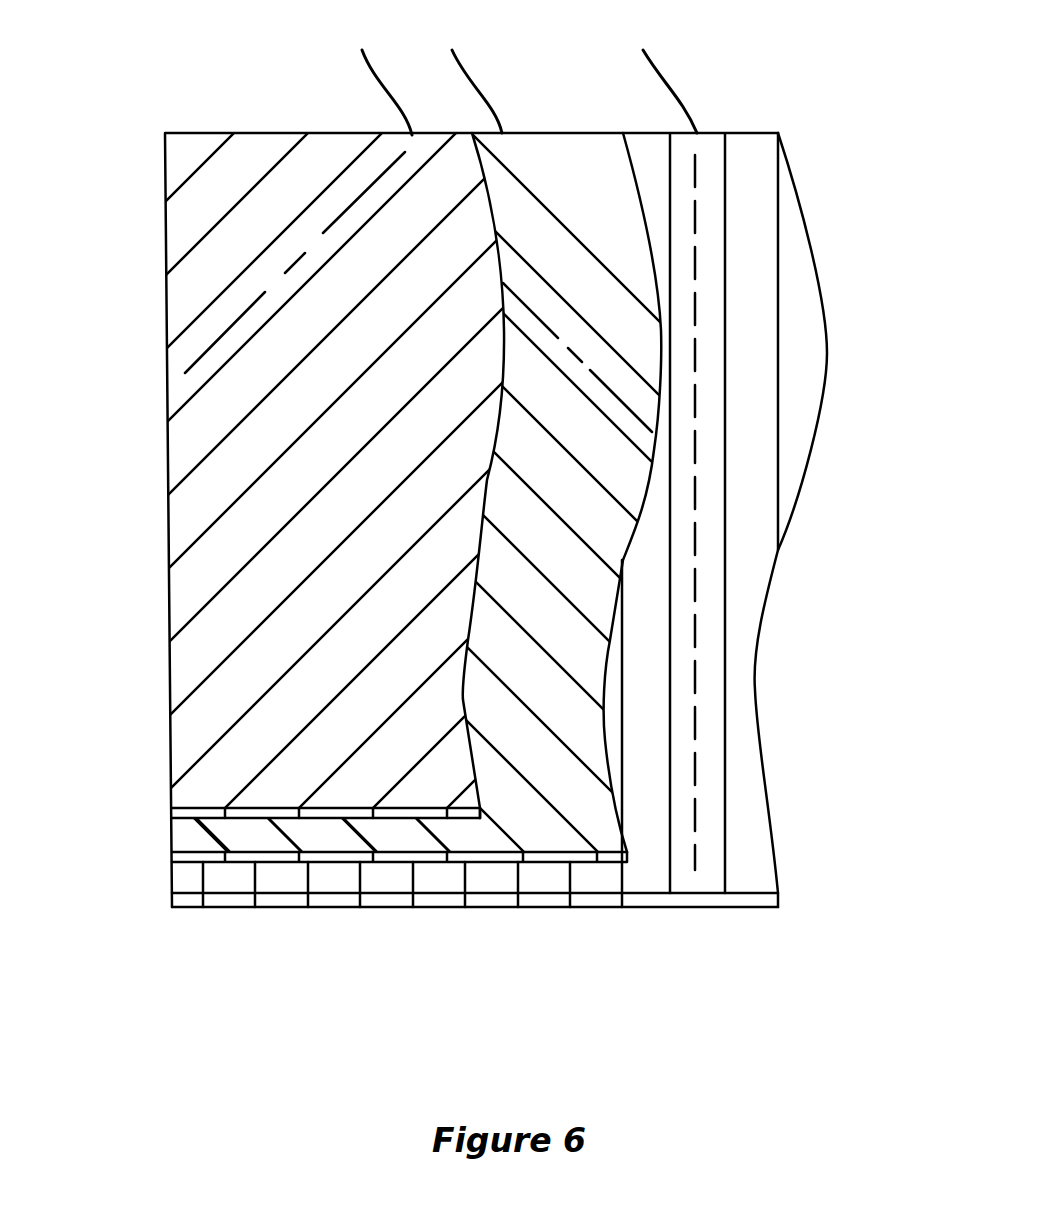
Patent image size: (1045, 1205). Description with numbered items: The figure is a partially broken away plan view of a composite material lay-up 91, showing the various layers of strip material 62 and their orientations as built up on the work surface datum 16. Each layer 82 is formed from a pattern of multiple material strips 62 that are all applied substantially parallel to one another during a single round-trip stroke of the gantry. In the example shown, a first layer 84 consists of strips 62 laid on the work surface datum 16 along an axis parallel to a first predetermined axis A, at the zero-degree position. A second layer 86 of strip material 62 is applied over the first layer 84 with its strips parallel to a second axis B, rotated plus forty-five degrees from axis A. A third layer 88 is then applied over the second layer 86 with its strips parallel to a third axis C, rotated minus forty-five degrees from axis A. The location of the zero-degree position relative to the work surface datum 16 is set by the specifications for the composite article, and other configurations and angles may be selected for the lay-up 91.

The work surface datum 16 is at (522, 525).
The strip material 62 is at (522, 483).
The layer 82 is at (253, 815).
The first layer 84 is at (813, 302).
The second layer 86 is at (595, 828).
The third layer 88 is at (323, 773).
The composite material lay-up 91 is at (188, 443).